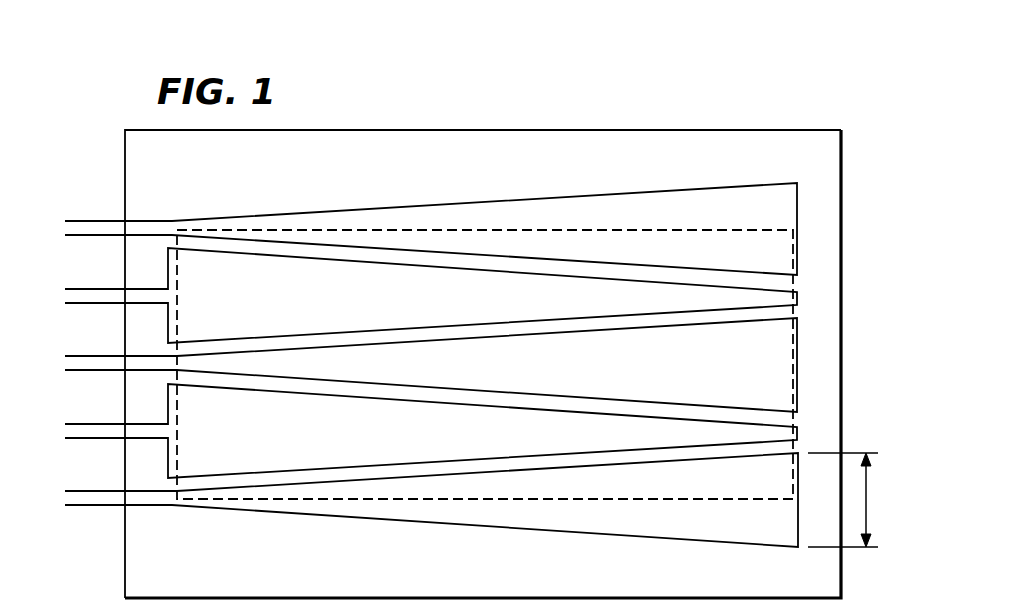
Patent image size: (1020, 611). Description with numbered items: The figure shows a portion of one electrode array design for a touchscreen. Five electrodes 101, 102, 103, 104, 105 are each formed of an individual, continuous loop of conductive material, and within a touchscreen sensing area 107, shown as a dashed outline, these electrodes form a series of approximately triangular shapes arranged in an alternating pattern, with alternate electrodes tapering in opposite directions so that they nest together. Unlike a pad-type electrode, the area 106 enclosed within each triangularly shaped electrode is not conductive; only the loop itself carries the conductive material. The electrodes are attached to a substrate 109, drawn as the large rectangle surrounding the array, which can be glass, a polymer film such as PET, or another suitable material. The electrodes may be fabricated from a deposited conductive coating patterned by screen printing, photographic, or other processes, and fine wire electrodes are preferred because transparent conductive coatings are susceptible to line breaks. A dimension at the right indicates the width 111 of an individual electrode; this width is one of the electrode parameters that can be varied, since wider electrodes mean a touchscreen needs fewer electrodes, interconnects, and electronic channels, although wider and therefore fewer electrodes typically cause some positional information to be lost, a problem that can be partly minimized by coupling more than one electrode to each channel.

The electrode 101 is at (460, 203).
The electrode 102 is at (410, 328).
The electrode 103 is at (678, 400).
The electrode 104 is at (405, 399).
The electrode 105 is at (773, 545).
The area within electrode 106 is at (250, 441).
The touchscreen sensing area 107 is at (663, 230).
The substrate 109 is at (742, 130).
The width 111 is at (866, 491).